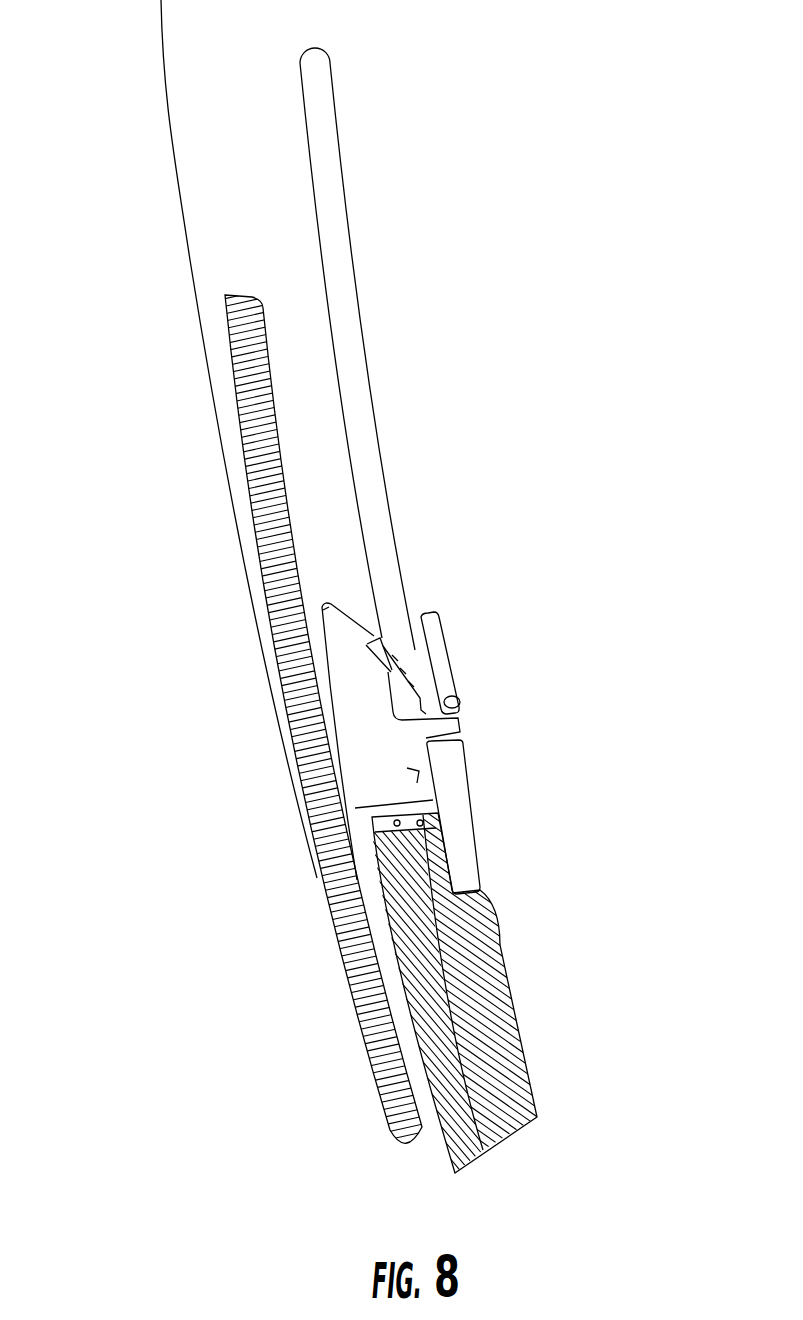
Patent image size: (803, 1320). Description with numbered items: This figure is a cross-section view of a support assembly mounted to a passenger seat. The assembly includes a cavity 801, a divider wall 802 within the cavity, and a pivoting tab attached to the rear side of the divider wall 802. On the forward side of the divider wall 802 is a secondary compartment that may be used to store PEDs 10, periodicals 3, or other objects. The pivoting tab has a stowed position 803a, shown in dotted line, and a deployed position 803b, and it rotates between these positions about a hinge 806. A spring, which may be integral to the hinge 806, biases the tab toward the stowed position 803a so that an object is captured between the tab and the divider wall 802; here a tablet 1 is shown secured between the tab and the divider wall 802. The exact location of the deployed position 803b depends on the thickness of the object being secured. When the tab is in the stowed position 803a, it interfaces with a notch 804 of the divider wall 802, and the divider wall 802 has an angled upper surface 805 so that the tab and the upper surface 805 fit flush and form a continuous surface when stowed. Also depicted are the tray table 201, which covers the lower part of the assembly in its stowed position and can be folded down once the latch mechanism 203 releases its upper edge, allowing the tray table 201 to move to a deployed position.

The tablet 1 is at (364, 349).
The PED 10 is at (330, 190).
The periodical 3 is at (250, 490).
The cavity 801 is at (232, 168).
The divider wall 802 is at (359, 734).
The stowed position 803a is at (367, 658).
The deployed position 803b is at (442, 647).
The notch 804 is at (373, 645).
The angled upper surface 805 is at (375, 640).
The hinge 806 is at (458, 702).
The tray table 201 is at (530, 1073).
The latch mechanism 203 is at (460, 820).